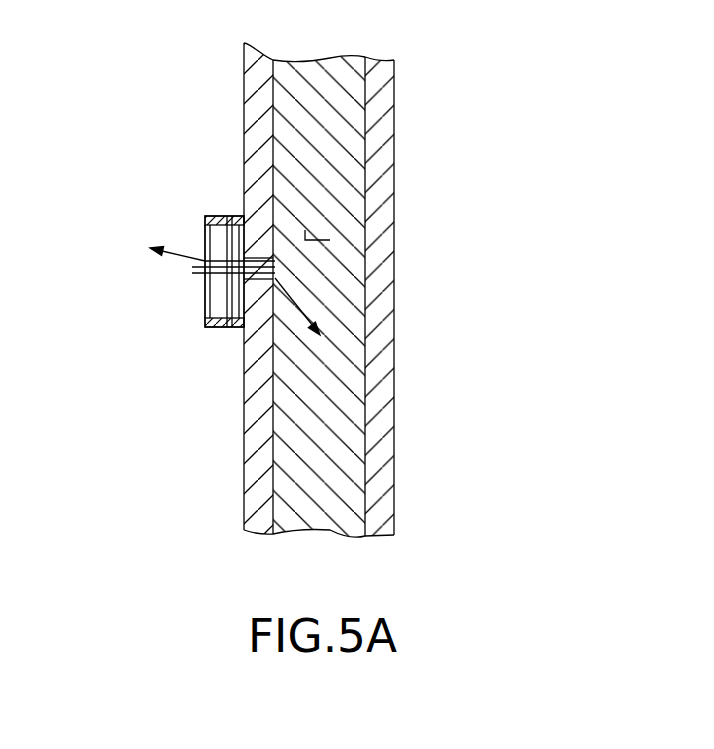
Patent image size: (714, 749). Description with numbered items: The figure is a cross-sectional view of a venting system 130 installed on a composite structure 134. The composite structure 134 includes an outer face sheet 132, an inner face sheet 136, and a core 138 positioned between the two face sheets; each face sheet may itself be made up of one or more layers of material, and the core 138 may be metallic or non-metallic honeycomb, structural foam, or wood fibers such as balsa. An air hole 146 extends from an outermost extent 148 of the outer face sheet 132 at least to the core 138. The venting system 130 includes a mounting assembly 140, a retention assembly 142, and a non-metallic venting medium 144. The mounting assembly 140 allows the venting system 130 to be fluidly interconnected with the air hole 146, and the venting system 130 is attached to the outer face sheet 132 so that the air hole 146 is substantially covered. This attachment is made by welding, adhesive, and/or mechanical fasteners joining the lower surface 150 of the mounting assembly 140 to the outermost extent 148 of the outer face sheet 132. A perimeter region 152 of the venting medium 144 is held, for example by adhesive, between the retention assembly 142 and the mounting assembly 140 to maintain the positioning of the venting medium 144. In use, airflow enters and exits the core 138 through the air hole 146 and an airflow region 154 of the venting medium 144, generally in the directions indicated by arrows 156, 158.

The venting system 130 is at (135, 297).
The outer face sheet 132 is at (252, 393).
The composite structure 134 is at (418, 214).
The inner face sheet 136 is at (380, 114).
The core 138 is at (333, 72).
The mounting assembly 140 is at (237, 332).
The retention assembly 142 is at (216, 216).
The non-metallic venting medium 144 is at (232, 244).
The air hole 146 is at (276, 270).
The outermost extent 148 is at (246, 448).
The lower surface 150 is at (247, 224).
The perimeter region 152 is at (207, 325).
The airflow region 154 is at (205, 305).
The arrow 156 is at (316, 314).
The arrow 158 is at (330, 240).